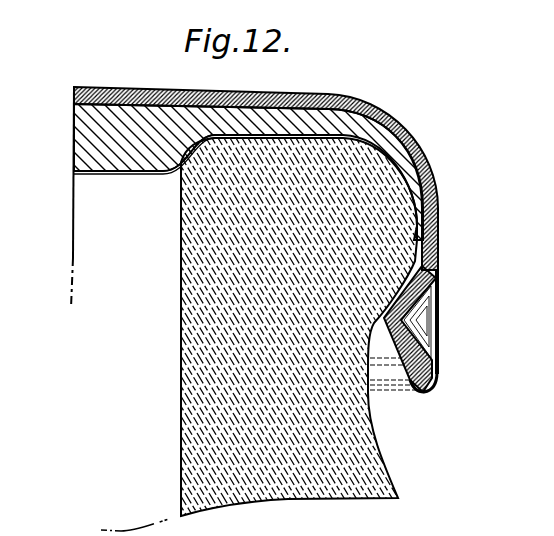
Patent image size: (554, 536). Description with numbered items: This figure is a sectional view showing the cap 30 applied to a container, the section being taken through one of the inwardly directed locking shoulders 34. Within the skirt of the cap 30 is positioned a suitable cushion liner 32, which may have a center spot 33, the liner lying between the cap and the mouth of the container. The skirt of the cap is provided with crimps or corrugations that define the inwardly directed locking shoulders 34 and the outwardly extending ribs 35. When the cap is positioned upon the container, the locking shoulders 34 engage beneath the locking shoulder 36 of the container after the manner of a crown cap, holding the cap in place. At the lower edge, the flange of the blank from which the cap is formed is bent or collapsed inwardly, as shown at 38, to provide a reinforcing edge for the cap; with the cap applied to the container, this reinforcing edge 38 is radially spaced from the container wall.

The cap 30 is at (137, 66).
The cushion liner 32 is at (82, 129).
The center spot 33 is at (116, 165).
The inwardly directed locking shoulders 34 is at (396, 311).
The outwardly extending ribs 35 is at (432, 331).
The locking shoulder of the container 36 is at (428, 282).
The inwardly bent flange reinforcing edge 38 is at (428, 373).